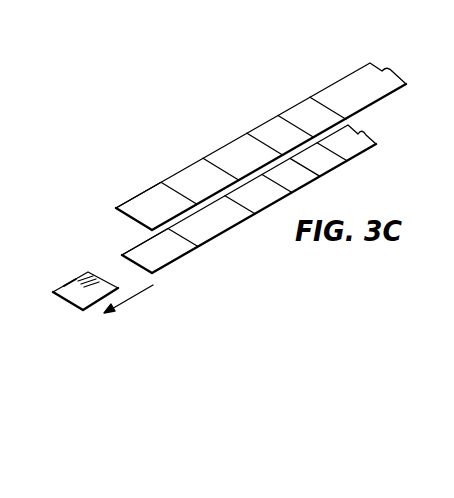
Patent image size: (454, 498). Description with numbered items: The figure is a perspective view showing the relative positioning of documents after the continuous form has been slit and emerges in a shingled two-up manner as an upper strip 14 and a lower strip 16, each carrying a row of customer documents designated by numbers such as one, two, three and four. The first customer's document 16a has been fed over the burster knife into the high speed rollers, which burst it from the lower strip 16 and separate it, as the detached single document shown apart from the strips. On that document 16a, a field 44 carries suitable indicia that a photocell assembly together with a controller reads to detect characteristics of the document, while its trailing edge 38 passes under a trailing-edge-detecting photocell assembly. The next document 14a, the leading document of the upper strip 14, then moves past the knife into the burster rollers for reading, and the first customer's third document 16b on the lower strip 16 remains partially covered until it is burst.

The upper strip 14 is at (264, 136).
The next document 14a is at (142, 192).
The lower strip 16 is at (274, 192).
The first customer's third document 16b is at (172, 258).
The first customer's document 16a is at (67, 283).
The trailing edge 38 is at (102, 277).
The field 44 is at (77, 280).